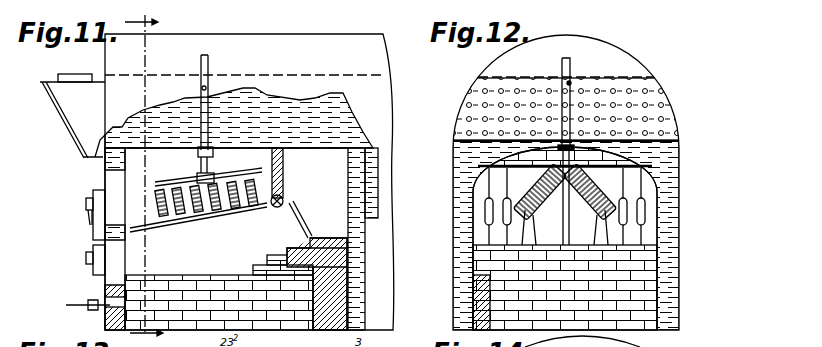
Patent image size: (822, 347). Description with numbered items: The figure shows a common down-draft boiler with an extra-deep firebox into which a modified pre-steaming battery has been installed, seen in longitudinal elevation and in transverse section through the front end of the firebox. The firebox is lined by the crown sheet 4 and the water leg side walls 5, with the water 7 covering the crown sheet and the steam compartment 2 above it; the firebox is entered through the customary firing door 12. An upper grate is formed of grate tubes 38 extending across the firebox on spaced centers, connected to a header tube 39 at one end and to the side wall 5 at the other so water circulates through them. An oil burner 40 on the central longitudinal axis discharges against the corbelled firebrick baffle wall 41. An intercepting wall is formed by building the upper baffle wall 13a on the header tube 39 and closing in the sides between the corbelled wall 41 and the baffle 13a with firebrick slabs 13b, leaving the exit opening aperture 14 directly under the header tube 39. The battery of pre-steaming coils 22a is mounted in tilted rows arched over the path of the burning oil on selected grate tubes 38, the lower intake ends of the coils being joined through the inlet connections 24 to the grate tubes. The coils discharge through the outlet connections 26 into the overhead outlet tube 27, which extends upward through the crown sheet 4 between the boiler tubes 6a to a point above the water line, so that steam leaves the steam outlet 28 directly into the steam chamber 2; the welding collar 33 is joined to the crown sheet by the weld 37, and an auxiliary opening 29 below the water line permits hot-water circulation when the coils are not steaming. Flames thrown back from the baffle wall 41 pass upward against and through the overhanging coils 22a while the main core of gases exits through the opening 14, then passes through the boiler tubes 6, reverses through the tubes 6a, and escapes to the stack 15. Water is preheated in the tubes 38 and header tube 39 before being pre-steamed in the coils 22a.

In FIG. 11, the steam compartment 2 is at (343, 44).
In FIG. 12, the steam compartment 2 is at (639, 72).
In FIG. 11, the crown sheet 4 is at (150, 148).
In FIG. 12, the crown sheet 4 is at (565, 157).
In FIG. 11, the side walls 5 is at (122, 162).
In FIG. 12, the side walls 5 is at (650, 216).
In FIG. 11, the boiler tubes 6 is at (368, 198).
In FIG. 11, the boiler tubes (flues) 6a is at (352, 132).
In FIG. 12, the boiler tubes (flues) 6a is at (655, 118).
In FIG. 11, the water 7 is at (105, 231).
In FIG. 12, the water 7 is at (461, 225).
In FIG. 11, the firing door 12 is at (84, 214).
In FIG. 11, the upper baffle wall 13a is at (283, 173).
In FIG. 12, the upper baffle wall 13a is at (660, 174).
In FIG. 11, the firebrick slabs 13b is at (301, 212).
In FIG. 12, the firebrick slabs 13b is at (620, 240).
In FIG. 11, the exit opening aperture 14 is at (288, 231).
In FIG. 12, the exit opening aperture 14 is at (563, 241).
In FIG. 11, the boiler stack 15 is at (75, 80).
In FIG. 11, the pre-steaming coils 22a is at (196, 222).
In FIG. 12, the pre-steaming coils 22a is at (600, 192).
In FIG. 12, the inlet connections 24 is at (565, 208).
In FIG. 11, the outlet connections 26 is at (258, 174).
In FIG. 12, the outlet connections 26 is at (556, 178).
In FIG. 11, the outlet tube 27 is at (208, 71).
In FIG. 12, the outlet tube 27 is at (562, 70).
In FIG. 11, the steam outlet 28 is at (206, 58).
In FIG. 12, the steam outlet 28 is at (571, 61).
In FIG. 11, the water intake and outlet opening 29 is at (201, 90).
In FIG. 12, the water intake and outlet opening 29 is at (572, 82).
In FIG. 11, the welding collar 33 is at (198, 155).
In FIG. 12, the welding collar 33 is at (572, 150).
In FIG. 11, the weld 37 is at (207, 153).
In FIG. 11, the grate tubes 38 is at (139, 242).
In FIG. 12, the grate tubes 38 is at (696, 216).
In FIG. 11, the header tube 39 is at (270, 209).
In FIG. 12, the header tube 39 is at (656, 198).
In FIG. 11, the oil burner 40 is at (105, 302).
In FIG. 11, the corbelled firebrick baffle wall 41 is at (358, 273).
In FIG. 12, the corbelled firebrick baffle wall 41 is at (660, 258).